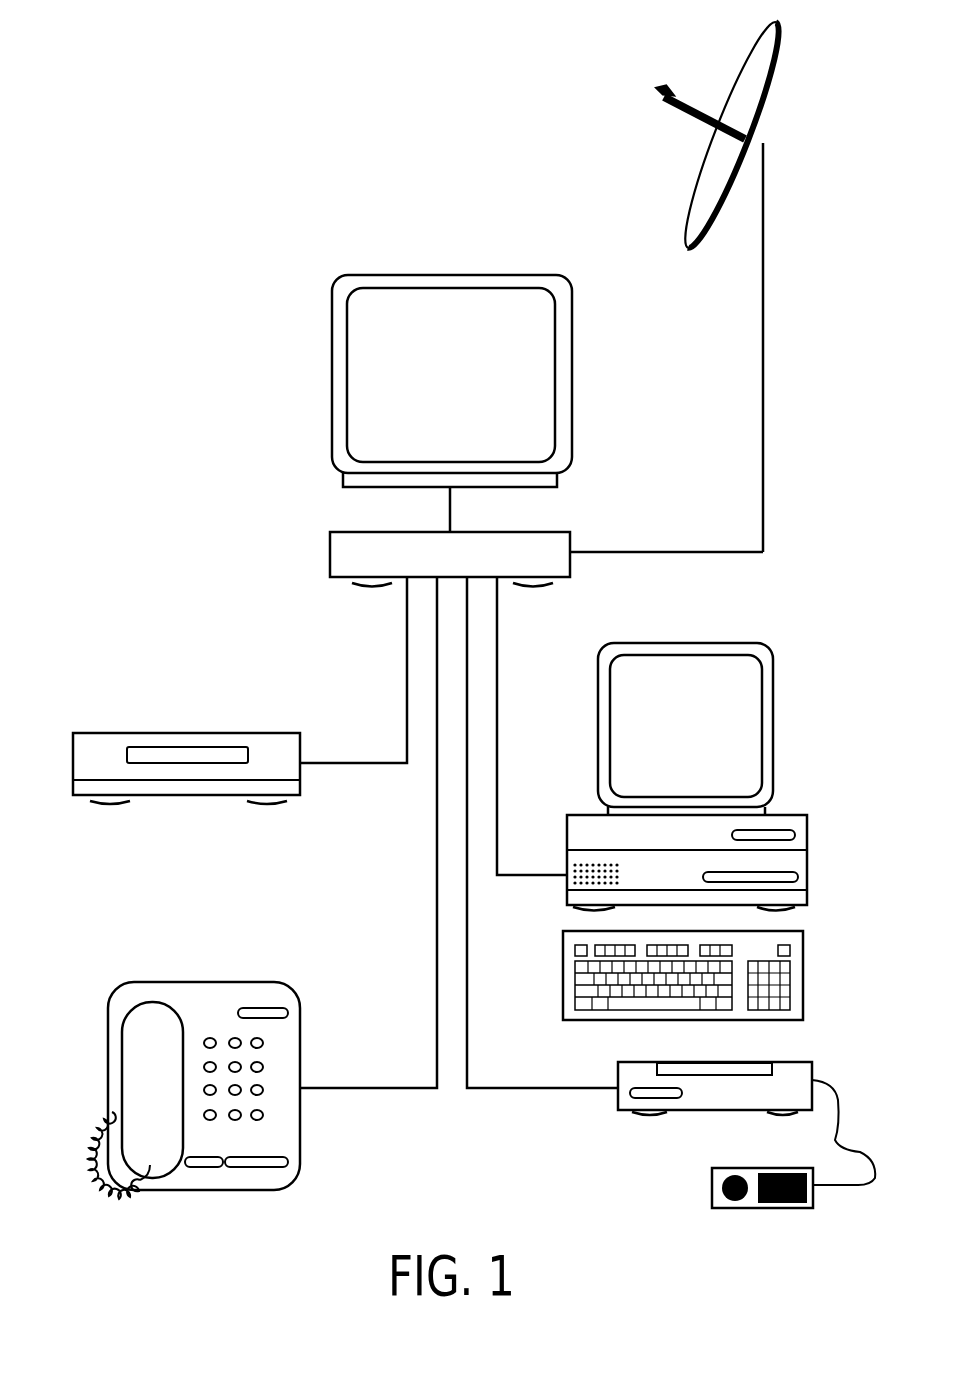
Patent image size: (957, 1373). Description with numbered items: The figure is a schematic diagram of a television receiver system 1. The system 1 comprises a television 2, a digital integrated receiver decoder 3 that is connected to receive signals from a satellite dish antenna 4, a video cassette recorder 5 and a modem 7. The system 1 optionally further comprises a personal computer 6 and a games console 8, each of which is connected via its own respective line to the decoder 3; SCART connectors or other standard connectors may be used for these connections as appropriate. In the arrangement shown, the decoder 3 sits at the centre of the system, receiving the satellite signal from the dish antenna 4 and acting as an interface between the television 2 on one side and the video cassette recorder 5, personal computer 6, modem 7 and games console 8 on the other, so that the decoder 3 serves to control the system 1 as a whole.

The television receiver system 1 is at (357, 98).
The television 2 is at (332, 378).
The digital integrated receiver decoder 3 is at (330, 570).
The satellite dish antenna 4 is at (745, 62).
The video cassette recorder 5 is at (73, 767).
The personal computer 6 is at (807, 826).
The modem 7 is at (108, 1040).
The games console 8 is at (812, 1066).